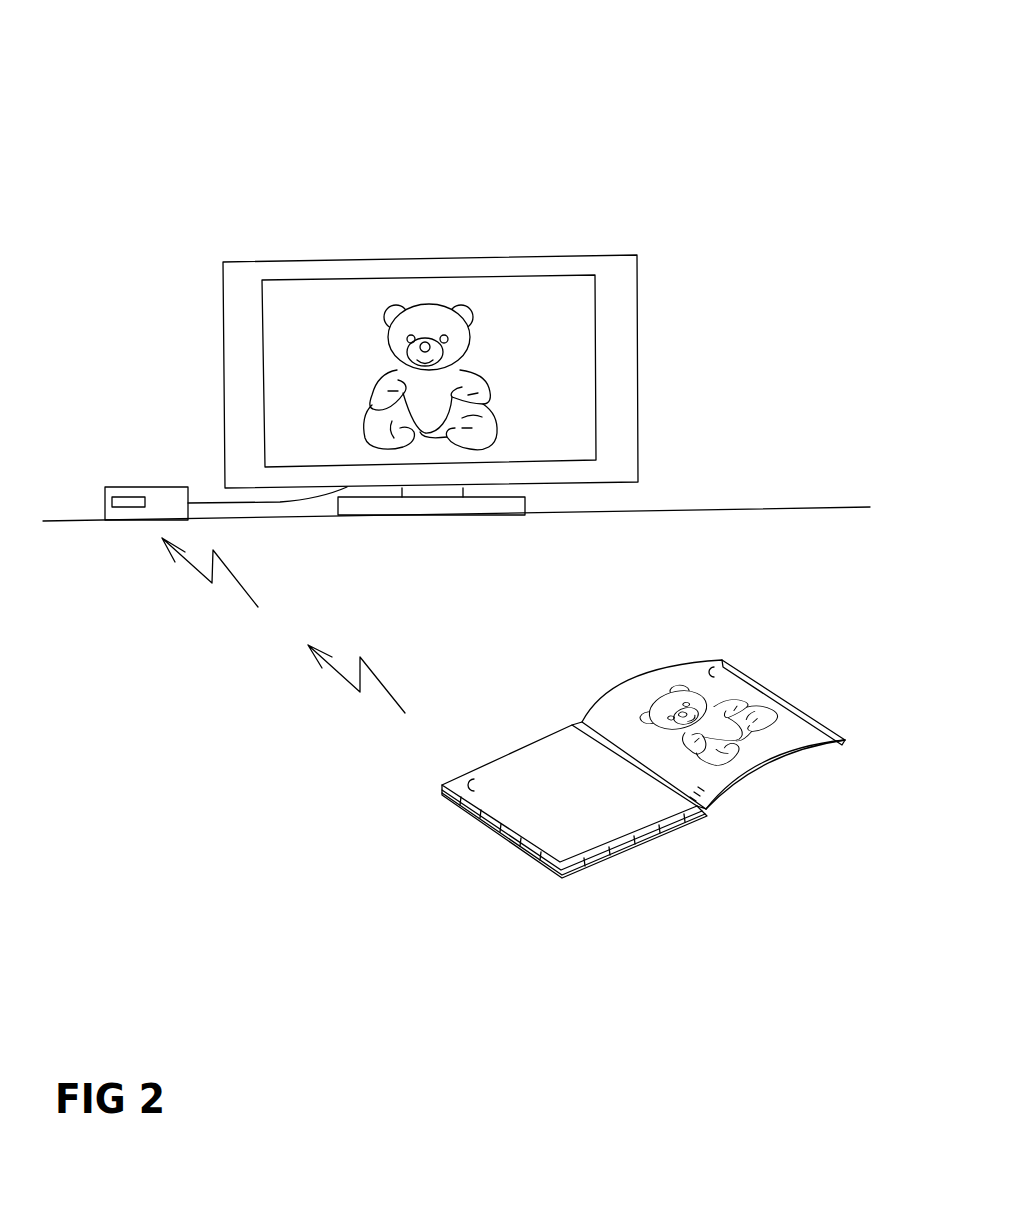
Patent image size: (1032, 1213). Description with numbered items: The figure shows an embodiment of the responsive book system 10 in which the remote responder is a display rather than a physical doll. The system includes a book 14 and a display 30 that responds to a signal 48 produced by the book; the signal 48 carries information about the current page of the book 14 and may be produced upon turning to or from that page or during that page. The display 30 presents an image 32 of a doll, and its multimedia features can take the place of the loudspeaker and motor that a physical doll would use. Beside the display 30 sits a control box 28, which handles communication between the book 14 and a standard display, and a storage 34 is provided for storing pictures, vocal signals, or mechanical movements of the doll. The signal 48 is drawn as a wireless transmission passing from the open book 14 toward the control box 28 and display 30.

The responsive book system 10 is at (792, 98).
The book 14 is at (758, 617).
The control box 28 is at (173, 493).
The display 30 is at (247, 335).
The image of a doll 32 is at (427, 322).
The storage 34 is at (210, 500).
The signal 48 is at (360, 655).